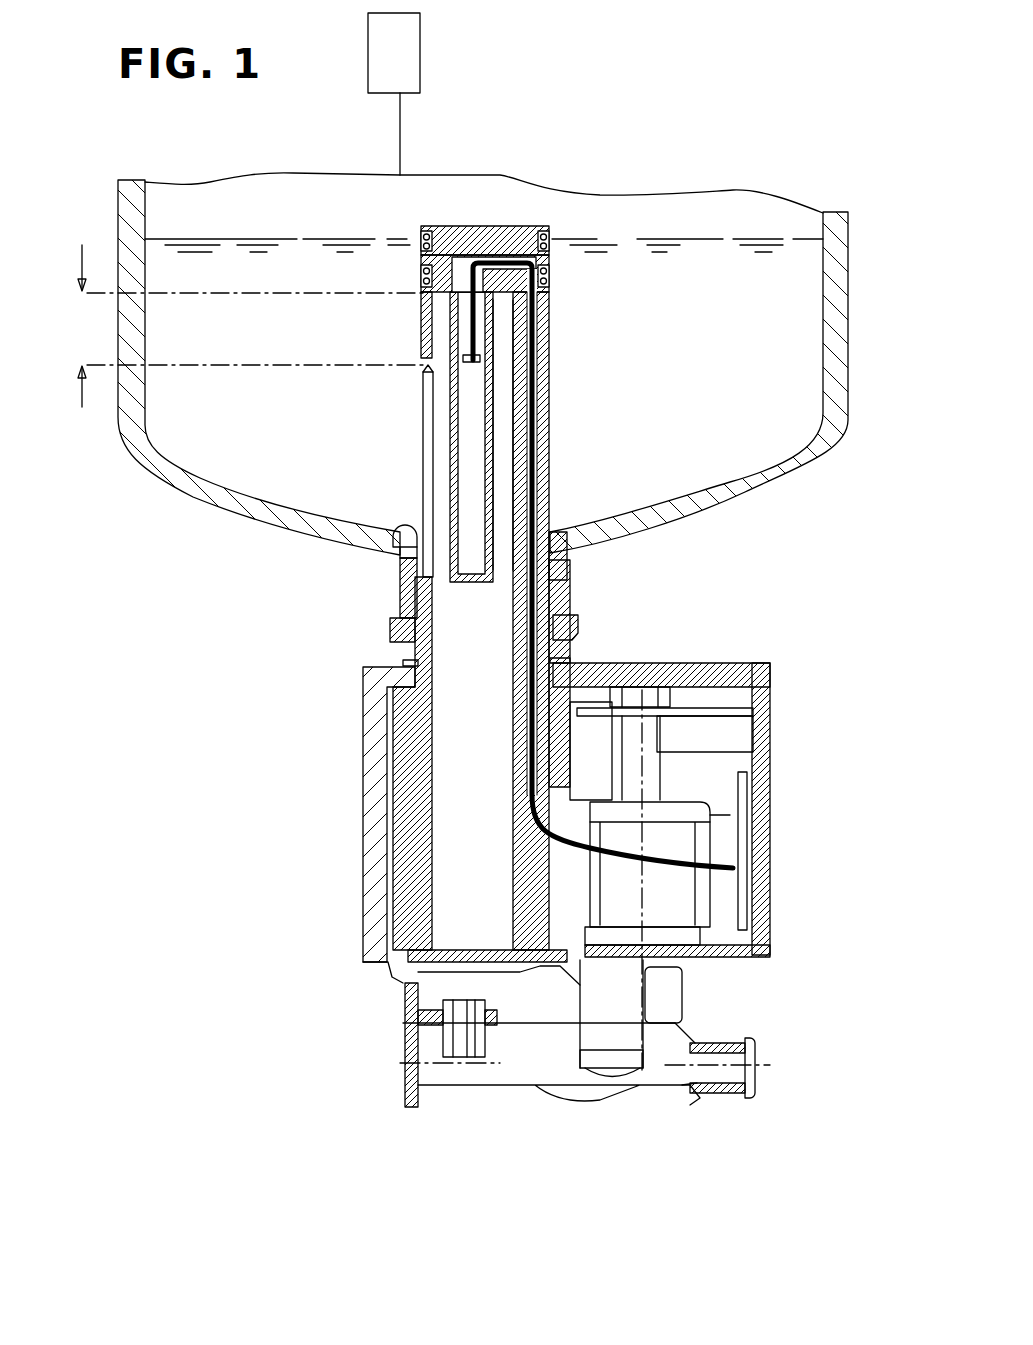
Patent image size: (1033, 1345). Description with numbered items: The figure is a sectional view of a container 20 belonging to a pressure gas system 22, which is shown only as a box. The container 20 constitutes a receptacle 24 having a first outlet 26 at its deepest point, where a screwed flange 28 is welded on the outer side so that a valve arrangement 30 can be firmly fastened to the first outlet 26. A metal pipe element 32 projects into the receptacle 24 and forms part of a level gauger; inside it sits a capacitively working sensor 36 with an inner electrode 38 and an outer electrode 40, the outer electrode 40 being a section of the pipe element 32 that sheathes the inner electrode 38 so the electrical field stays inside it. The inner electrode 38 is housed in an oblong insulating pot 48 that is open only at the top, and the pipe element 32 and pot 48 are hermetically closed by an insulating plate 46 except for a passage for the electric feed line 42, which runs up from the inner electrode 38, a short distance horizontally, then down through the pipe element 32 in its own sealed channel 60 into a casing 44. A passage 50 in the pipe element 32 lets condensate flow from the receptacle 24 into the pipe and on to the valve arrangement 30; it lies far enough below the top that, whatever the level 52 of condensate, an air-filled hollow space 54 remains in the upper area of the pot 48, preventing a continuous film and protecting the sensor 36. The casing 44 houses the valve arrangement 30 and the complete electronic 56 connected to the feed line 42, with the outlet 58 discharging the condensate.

The container 20 is at (831, 220).
The pressure gas system 22 is at (420, 56).
The receptacle 24 is at (148, 206).
The first outlet 26 is at (395, 527).
The screwed flange 28 is at (400, 612).
The valve arrangement 30 is at (725, 933).
The pipe element 32 is at (517, 489).
The sensor 36 is at (443, 430).
The inner electrode 38 is at (472, 457).
The outer electrode 40 is at (506, 409).
The electric feed line 42 is at (493, 230).
The casing 44 is at (377, 822).
The plate 46 is at (467, 230).
The pot 48 is at (450, 491).
The passage 50 is at (423, 370).
The level 52 is at (297, 237).
The hollow space 54 is at (504, 312).
The electronic 56 is at (742, 833).
The outlet 58 is at (753, 1068).
The channel 60 is at (556, 611).